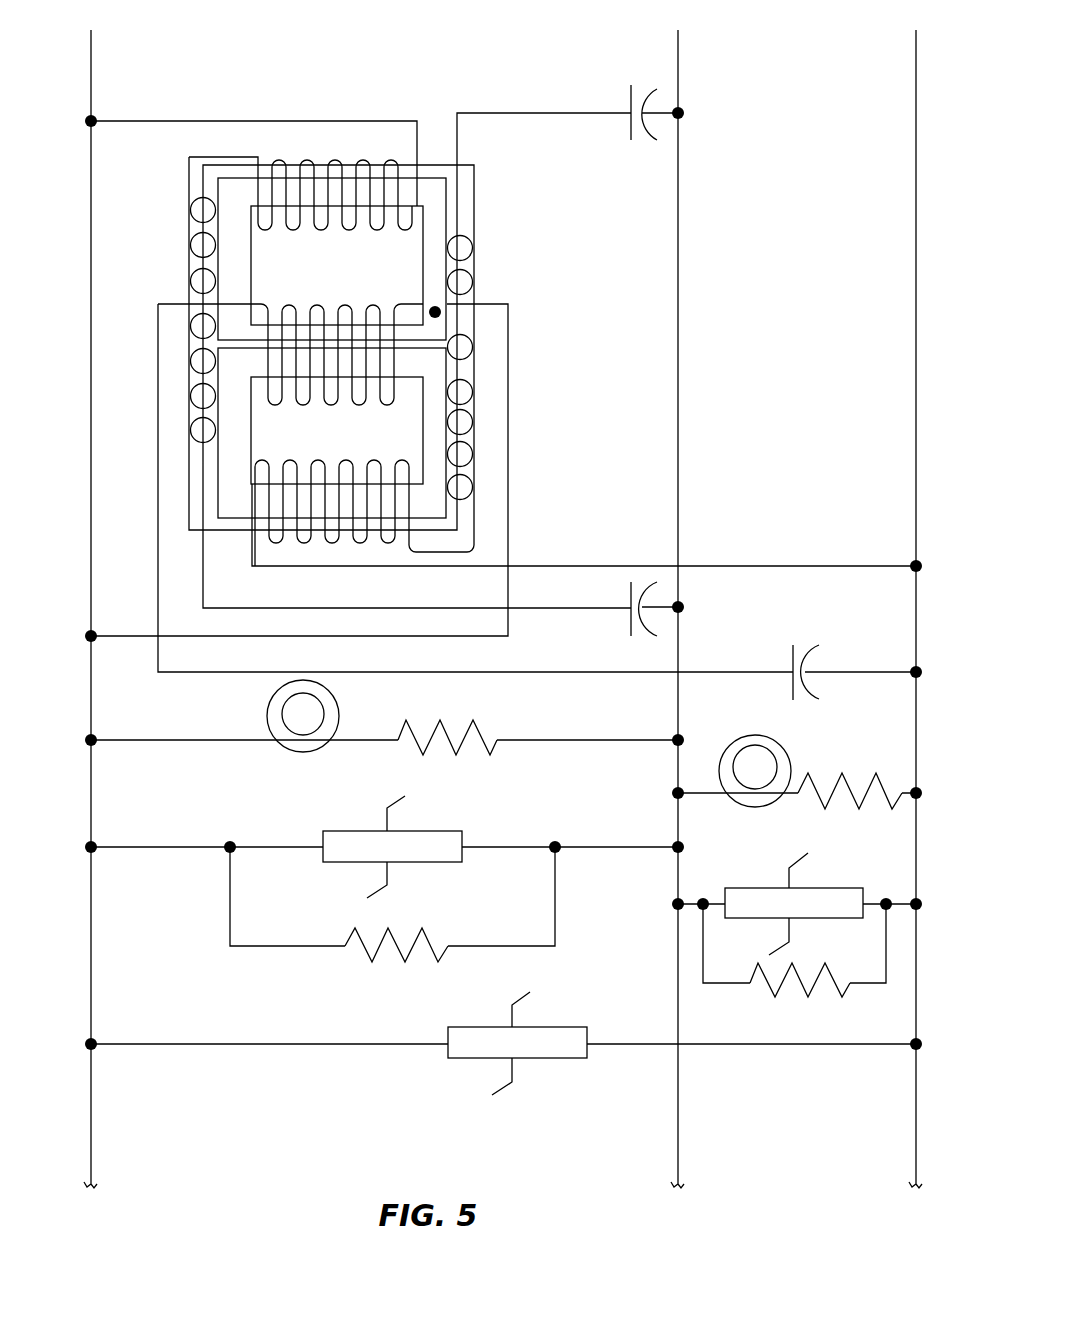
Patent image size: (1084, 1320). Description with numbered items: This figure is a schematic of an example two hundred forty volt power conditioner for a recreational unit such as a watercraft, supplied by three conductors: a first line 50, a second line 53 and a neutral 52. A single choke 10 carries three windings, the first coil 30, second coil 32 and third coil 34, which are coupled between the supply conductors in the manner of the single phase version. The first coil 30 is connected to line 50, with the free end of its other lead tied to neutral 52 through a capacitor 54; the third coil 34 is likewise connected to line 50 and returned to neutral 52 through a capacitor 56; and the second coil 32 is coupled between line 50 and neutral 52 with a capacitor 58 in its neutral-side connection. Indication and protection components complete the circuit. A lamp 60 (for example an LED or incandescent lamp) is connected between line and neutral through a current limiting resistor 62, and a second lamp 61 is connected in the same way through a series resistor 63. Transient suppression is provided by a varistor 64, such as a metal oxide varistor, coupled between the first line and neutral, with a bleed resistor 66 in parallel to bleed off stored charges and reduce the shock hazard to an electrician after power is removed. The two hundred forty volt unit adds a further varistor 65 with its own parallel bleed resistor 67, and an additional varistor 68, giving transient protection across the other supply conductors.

The choke 10 is at (492, 251).
The first coil 30 is at (307, 163).
The second coil 32 is at (316, 306).
The third coil 34 is at (318, 461).
The line 50 is at (91, 346).
The neutral 52 is at (678, 292).
The line 53 is at (916, 292).
The capacitor 54 is at (632, 128).
The capacitor 56 is at (631, 596).
The capacitor 58 is at (793, 660).
The lamp 60 is at (340, 712).
The lamp 61 is at (791, 770).
The current limiting resistor 62 is at (478, 728).
The series resistor 63 is at (851, 784).
The varistor 64 is at (442, 831).
The varistor 65 is at (840, 888).
The bleed resistor 66 is at (398, 957).
The bleed resistor 67 is at (808, 992).
The varistor 68 is at (565, 1027).